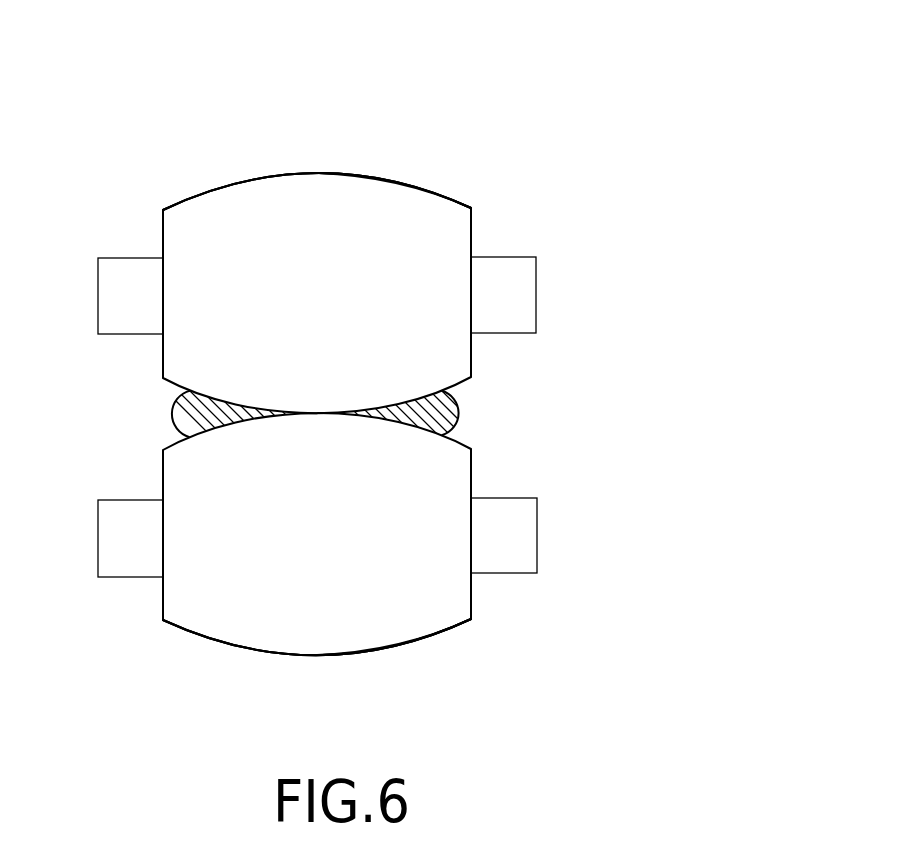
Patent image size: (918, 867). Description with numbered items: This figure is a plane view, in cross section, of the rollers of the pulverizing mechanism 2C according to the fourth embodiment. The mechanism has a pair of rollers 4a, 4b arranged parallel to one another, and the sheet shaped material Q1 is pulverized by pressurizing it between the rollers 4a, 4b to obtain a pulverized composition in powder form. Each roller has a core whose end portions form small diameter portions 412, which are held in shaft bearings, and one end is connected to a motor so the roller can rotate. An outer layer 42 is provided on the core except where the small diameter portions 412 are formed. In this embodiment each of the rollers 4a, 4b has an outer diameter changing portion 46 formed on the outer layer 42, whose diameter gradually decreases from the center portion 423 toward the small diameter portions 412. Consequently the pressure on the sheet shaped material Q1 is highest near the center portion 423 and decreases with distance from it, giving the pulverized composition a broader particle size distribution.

The pulverizing mechanism 2C is at (468, 104).
The roller 4a is at (477, 229).
The roller 4b is at (477, 597).
The outer layer 42 is at (207, 188).
The small diameter portion 412 is at (125, 258).
The center portion 423 is at (316, 172).
The outer diameter changing portion 46 is at (392, 177).
The sheet shaped material Q1 is at (442, 412).